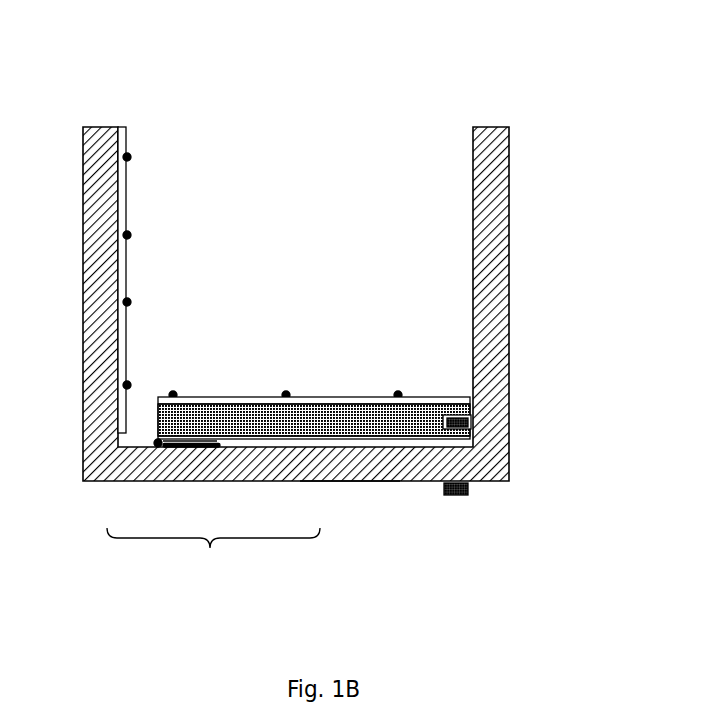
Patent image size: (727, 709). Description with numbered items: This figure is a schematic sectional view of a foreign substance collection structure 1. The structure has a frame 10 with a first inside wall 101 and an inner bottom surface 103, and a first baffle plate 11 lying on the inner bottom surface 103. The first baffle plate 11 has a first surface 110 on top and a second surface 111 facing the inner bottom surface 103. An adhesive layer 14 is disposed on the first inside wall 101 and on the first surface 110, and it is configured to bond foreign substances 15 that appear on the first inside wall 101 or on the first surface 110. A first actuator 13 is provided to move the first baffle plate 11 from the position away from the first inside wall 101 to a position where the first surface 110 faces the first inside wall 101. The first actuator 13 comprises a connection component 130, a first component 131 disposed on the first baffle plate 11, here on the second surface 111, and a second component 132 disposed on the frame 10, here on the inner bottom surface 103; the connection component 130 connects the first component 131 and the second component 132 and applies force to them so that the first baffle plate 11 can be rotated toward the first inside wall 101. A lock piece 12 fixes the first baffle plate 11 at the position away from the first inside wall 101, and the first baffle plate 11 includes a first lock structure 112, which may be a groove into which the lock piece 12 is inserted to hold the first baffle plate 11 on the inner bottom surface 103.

The foreign substance collection structure 1 is at (144, 75).
The frame 10 is at (296, 296).
The first inside wall 101 is at (170, 140).
The inner bottom surface 103 is at (370, 492).
The adhesive layer 14 is at (287, 280).
The foreign substances 15 is at (262, 276).
The first baffle plate 11 is at (314, 387).
The first surface 110 is at (314, 369).
The second surface 111 is at (314, 385).
The first lock structure 112 is at (504, 400).
The lock piece 12 is at (478, 429).
The first actuator 13 is at (213, 557).
The connection component 130 is at (133, 480).
The first component 131 is at (204, 481).
The second component 132 is at (241, 483).